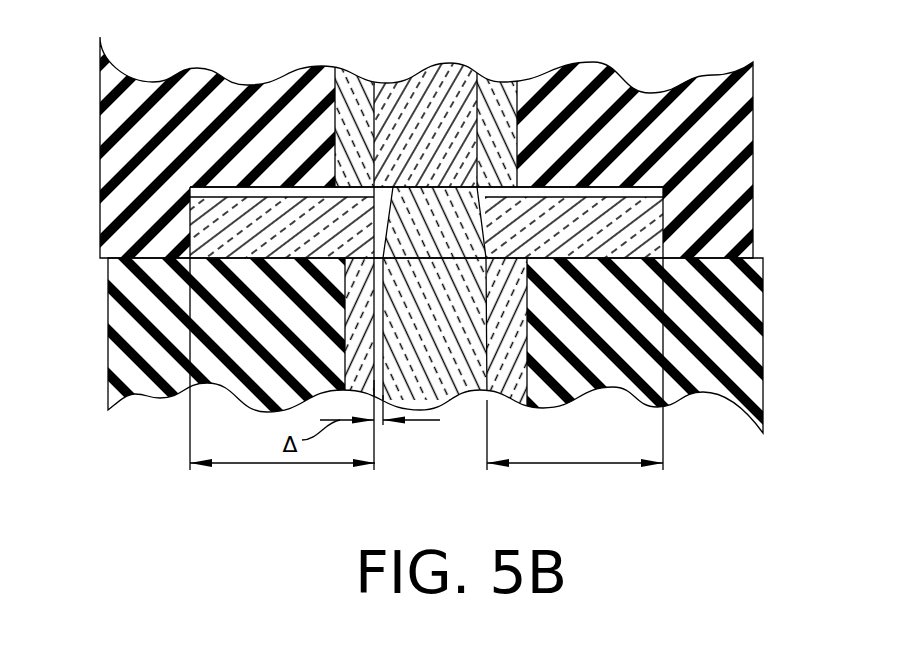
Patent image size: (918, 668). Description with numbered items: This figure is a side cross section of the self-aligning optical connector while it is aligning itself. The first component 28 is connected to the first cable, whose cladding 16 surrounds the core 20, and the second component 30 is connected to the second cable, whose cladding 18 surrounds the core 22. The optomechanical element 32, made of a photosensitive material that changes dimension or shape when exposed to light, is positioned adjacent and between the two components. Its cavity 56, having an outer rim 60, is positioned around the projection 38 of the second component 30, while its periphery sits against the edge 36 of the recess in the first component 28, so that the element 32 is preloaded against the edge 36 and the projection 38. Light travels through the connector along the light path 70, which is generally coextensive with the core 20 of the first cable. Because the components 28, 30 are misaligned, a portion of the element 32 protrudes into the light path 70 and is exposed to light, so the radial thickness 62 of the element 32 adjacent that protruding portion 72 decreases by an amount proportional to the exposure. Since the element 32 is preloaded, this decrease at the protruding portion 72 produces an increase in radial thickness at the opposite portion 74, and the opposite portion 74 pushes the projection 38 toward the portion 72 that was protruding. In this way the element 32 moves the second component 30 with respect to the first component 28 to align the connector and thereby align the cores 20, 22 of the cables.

The cladding 16 is at (335, 88).
The cladding 18 is at (300, 405).
The core 20 is at (497, 80).
The core 22 is at (490, 342).
The first component 28 is at (100, 146).
The second component 30 is at (108, 300).
The optomechanical element 32 is at (190, 212).
The edge 36 is at (662, 190).
The projection 38 is at (450, 243).
The cavity 56 is at (385, 225).
The outer rim 60 is at (485, 190).
The radial thickness 62 is at (257, 465).
The light path 70 is at (417, 80).
The protruding portion 72 is at (375, 187).
The opposite portion 74 is at (575, 196).